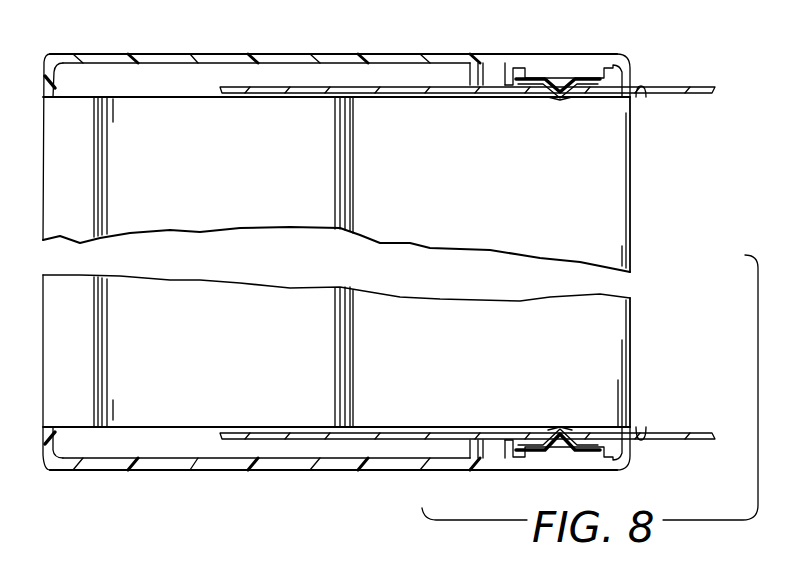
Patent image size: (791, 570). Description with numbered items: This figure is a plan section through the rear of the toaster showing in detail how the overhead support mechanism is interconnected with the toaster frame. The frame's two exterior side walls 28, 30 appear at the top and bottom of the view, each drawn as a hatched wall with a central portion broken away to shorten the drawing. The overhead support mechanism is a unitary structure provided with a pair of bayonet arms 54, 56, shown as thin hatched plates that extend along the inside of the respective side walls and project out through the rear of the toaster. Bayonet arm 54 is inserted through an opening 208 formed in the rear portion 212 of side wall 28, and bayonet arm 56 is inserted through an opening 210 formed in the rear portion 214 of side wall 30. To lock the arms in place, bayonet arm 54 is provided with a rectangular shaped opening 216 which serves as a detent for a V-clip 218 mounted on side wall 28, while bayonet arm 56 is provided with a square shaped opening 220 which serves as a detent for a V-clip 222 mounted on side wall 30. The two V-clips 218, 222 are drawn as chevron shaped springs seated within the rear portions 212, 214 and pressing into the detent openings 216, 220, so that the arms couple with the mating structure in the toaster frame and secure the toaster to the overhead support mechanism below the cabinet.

The side wall 28 is at (391, 61).
The side wall 30 is at (345, 471).
The bayonet arm 54 is at (427, 94).
The bayonet arm 56 is at (430, 432).
The opening 208 is at (643, 88).
The opening 210 is at (650, 437).
The rear portion 212 is at (627, 70).
The rear portion 214 is at (630, 460).
The rectangular shaped opening 216 is at (557, 99).
The V-clip 218 is at (541, 75).
The square shaped opening 220 is at (555, 430).
The V-clip 222 is at (570, 430).